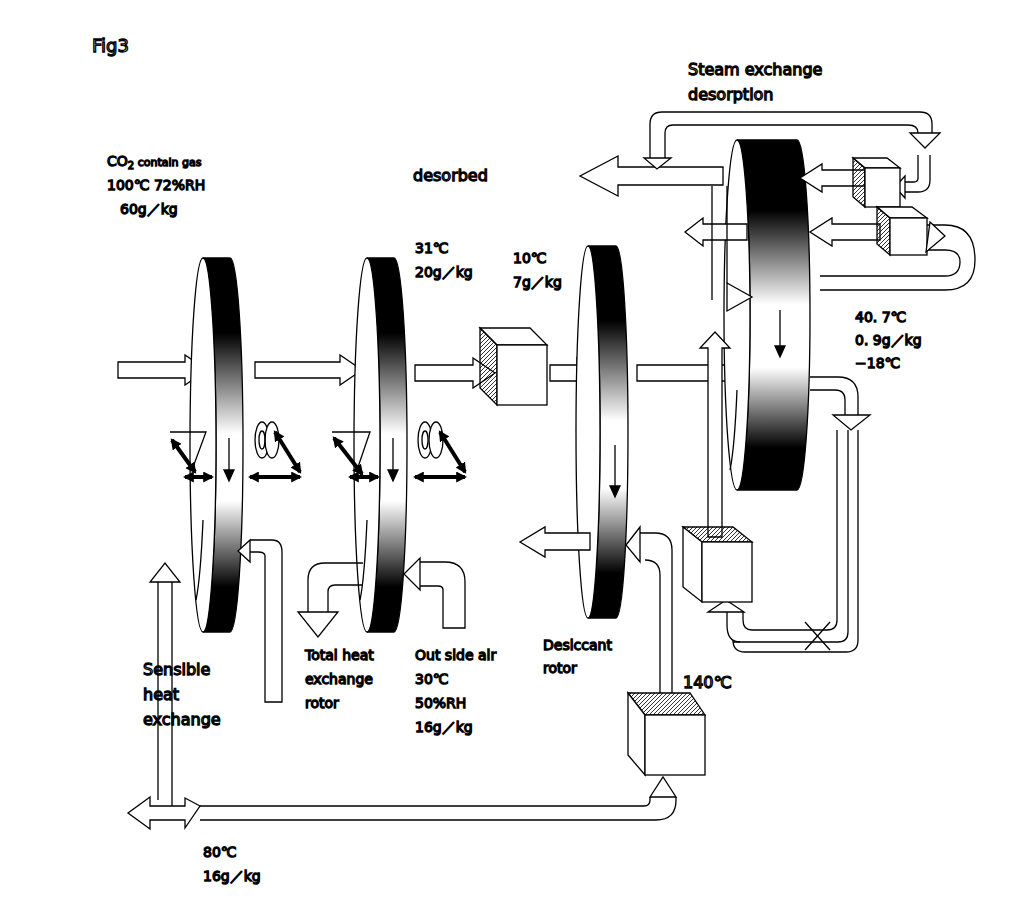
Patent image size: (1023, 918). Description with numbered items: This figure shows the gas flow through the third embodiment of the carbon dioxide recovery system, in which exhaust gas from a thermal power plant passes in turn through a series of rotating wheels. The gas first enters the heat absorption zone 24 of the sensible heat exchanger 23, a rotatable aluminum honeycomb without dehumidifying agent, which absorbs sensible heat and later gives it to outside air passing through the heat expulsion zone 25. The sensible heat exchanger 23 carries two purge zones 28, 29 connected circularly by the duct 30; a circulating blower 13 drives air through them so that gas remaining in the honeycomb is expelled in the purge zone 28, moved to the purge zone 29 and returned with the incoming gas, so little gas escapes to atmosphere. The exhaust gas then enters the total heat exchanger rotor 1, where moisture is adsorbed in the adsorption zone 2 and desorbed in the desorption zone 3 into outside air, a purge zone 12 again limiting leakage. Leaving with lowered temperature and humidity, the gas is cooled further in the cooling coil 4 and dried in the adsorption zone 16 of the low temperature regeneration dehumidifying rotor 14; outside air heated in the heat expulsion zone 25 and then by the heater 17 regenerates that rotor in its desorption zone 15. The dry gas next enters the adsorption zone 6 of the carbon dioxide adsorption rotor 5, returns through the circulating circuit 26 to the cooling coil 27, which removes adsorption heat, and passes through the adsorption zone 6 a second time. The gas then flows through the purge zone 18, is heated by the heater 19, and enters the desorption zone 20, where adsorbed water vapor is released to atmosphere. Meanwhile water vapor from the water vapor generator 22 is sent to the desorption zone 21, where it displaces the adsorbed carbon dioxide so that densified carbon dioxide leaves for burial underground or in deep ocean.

The total heat exchanger rotor 1 is at (390, 637).
The adsorption zone 2 is at (363, 327).
The desorption zone 3 is at (360, 522).
The cooling coil 4 is at (483, 345).
The carbon dioxide adsorption rotor 5 is at (768, 490).
The adsorption zone 6 is at (740, 425).
The purge zone 12 is at (357, 440).
The circulating blower 13 is at (432, 423).
The low temperature regeneration dehumidifying rotor 14 is at (590, 615).
The desorption zone 15 is at (580, 483).
The adsorption zone 16 is at (592, 400).
The heater 17 is at (703, 768).
The purge zone 18 is at (727, 293).
The heater 19 is at (913, 212).
The desorption zone 20 is at (745, 213).
The desorption zone 21 is at (722, 197).
The water vapor generator 22 is at (857, 162).
The sensible heat exchanger 23 is at (232, 632).
The heat absorption zone 24 is at (198, 323).
The heat expulsion zone 25 is at (203, 567).
The circulating circuit 26 is at (795, 660).
The cooling coil 27 is at (753, 577).
The purge zone 28 is at (203, 430).
The purge zone 29 is at (187, 467).
The duct 30 is at (183, 472).